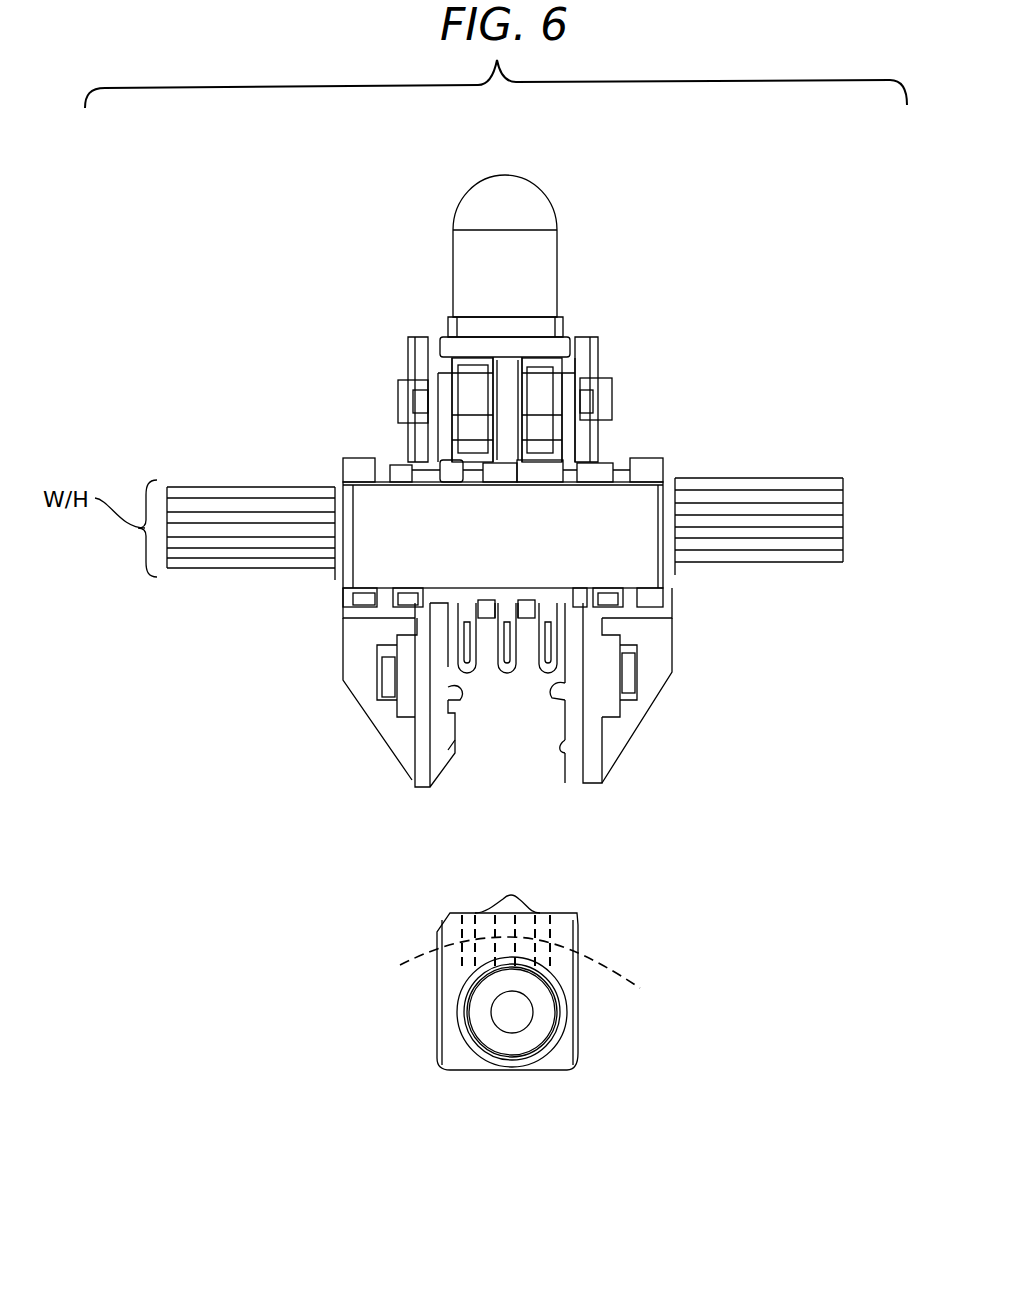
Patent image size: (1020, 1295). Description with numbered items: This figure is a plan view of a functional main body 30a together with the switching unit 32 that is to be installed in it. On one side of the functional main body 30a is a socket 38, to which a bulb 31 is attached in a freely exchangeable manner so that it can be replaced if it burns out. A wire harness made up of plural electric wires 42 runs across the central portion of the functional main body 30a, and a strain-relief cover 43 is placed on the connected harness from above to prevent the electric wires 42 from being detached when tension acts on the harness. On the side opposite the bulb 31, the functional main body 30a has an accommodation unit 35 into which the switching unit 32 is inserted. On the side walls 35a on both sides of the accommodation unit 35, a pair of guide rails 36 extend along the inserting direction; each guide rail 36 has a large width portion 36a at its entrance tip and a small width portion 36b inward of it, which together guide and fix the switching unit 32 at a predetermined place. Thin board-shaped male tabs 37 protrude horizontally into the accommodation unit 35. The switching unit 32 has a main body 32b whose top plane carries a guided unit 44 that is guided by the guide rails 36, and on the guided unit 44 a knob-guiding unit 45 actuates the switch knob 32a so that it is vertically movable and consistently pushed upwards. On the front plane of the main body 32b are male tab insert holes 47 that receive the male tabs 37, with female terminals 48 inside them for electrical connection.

The bulb 31 is at (533, 207).
The socket 38 is at (610, 357).
The strain-relief cover 43 is at (377, 498).
The electric wire 42 is at (835, 505).
The functional main body 30a is at (318, 653).
The male tab 37 is at (453, 652).
The guide rail 36 is at (457, 717).
The small width portion 36b is at (452, 698).
The side wall 35a is at (413, 772).
The large width portion 36a is at (475, 735).
The accommodation unit 35 is at (508, 742).
The male tab insert hole 47 is at (511, 893).
The female terminal 48 is at (515, 956).
The switching unit 32 is at (513, 1095).
The main body of the switching unit 32b is at (437, 1020).
The guided unit 44 is at (578, 1045).
The knob-guiding unit 45 is at (483, 1037).
The switch knob 32a is at (515, 1015).